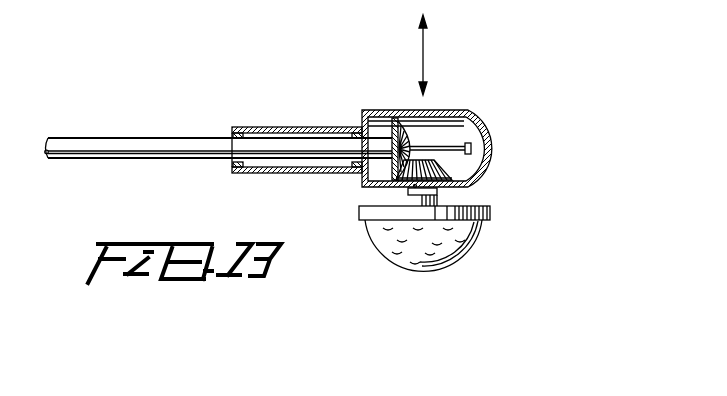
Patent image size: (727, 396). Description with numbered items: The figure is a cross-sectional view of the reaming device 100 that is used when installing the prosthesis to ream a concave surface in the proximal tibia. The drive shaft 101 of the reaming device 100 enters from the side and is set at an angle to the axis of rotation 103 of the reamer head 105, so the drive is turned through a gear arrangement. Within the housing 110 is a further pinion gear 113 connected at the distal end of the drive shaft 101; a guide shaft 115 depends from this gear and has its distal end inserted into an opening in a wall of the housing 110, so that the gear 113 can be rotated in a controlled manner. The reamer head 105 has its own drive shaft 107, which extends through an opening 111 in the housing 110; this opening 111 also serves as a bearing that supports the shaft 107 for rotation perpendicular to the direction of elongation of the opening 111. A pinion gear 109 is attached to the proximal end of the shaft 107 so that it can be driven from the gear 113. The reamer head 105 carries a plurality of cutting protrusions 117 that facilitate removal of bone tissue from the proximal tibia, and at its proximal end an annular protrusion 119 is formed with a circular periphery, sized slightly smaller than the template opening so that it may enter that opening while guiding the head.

The reaming device 100 is at (518, 100).
The drive shaft 101 is at (157, 138).
The axis of rotation 103 is at (423, 57).
The reamer head 105 is at (403, 262).
The drive shaft 107 is at (437, 204).
The pinion gear 109 is at (385, 181).
The housing 110 is at (360, 110).
The opening 111 is at (413, 196).
The pinion gear 113 is at (396, 120).
The guide shaft 115 is at (471, 148).
The cutting protrusions 117 is at (478, 243).
The annular protrusion 119 is at (490, 213).